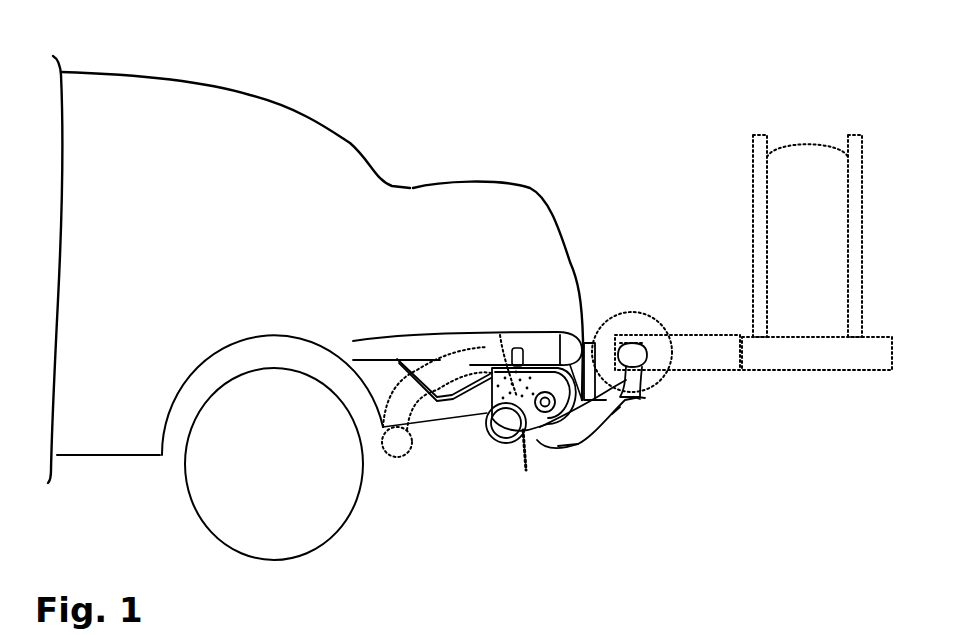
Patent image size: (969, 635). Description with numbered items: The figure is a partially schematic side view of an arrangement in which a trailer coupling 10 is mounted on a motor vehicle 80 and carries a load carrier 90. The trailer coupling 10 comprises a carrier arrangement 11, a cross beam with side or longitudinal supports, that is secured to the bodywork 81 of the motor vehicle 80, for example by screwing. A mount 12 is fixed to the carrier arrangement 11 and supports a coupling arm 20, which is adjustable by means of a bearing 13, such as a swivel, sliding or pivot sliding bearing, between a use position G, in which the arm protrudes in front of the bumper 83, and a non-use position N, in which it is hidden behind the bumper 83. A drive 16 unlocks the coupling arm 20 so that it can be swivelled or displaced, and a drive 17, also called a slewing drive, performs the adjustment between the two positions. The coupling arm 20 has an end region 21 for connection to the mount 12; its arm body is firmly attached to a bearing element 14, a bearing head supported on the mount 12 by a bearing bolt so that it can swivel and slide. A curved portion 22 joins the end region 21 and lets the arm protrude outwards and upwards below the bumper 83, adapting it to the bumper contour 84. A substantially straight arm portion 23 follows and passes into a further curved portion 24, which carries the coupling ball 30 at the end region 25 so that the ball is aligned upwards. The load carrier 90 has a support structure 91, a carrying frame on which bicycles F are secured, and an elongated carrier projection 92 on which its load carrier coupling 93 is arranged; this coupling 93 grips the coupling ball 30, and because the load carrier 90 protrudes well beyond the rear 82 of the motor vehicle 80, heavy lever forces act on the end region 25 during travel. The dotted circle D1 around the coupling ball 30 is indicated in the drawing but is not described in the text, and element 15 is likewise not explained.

The trailer coupling 10 is at (605, 442).
The carrier arrangement 11 is at (387, 338).
The mount 12 is at (562, 373).
The bearing 13 is at (500, 372).
The bearing element 14 is at (530, 370).
The cable 15 is at (500, 335).
The drive 16 is at (472, 403).
The drive 17 is at (518, 348).
The coupling arm 20 is at (586, 446).
The end region 21 is at (538, 432).
The curved portion 22 is at (560, 442).
The arm portion 23 is at (615, 417).
The curved portion 24 is at (635, 397).
The end region 25 is at (642, 375).
The coupling ball 30 is at (643, 352).
The motor vehicle 80 is at (319, 114).
The bodywork 81 is at (199, 86).
The rear 82 is at (550, 213).
The bumper 83 is at (588, 343).
The bumper contour 84 is at (640, 397).
The load carrier 90 is at (878, 327).
The support structure 91 is at (823, 352).
The carrier projection 92 is at (727, 347).
The load carrier coupling 93 is at (643, 343).
The diameter D1 is at (608, 302).
The bicycles F is at (807, 142).
The use position G is at (666, 450).
The non-use position N is at (397, 461).